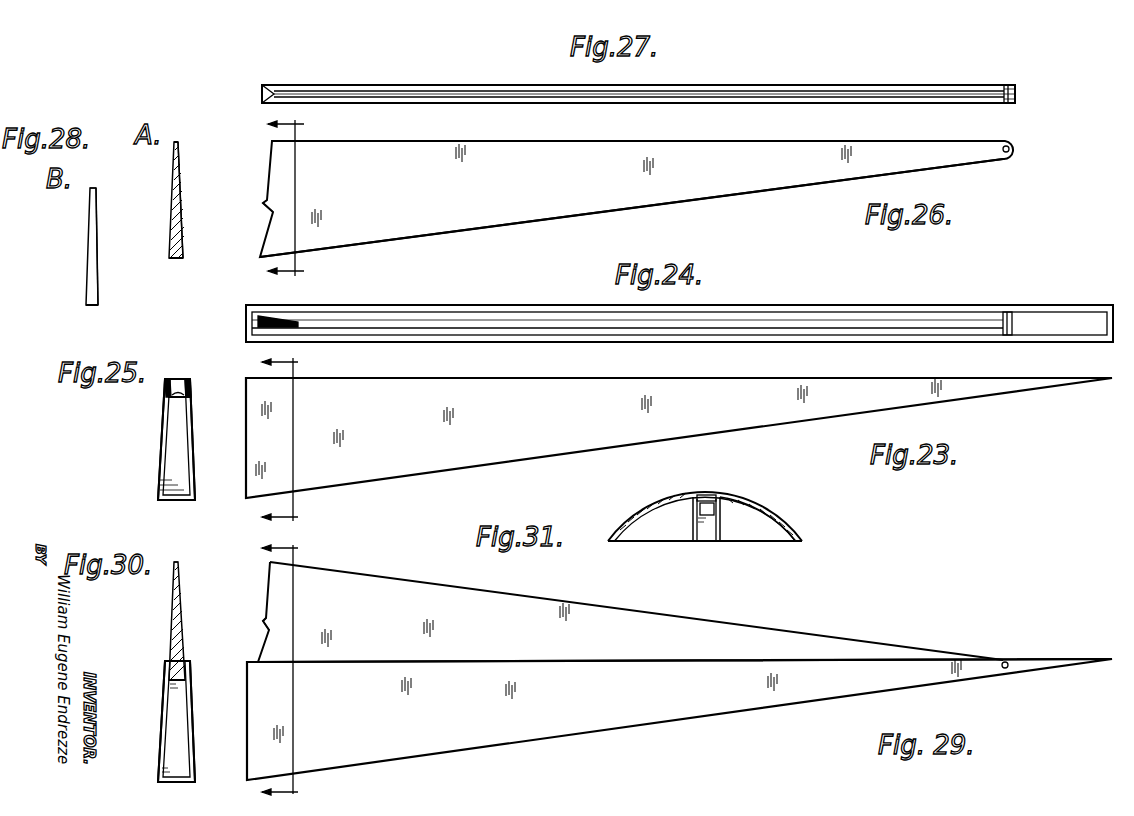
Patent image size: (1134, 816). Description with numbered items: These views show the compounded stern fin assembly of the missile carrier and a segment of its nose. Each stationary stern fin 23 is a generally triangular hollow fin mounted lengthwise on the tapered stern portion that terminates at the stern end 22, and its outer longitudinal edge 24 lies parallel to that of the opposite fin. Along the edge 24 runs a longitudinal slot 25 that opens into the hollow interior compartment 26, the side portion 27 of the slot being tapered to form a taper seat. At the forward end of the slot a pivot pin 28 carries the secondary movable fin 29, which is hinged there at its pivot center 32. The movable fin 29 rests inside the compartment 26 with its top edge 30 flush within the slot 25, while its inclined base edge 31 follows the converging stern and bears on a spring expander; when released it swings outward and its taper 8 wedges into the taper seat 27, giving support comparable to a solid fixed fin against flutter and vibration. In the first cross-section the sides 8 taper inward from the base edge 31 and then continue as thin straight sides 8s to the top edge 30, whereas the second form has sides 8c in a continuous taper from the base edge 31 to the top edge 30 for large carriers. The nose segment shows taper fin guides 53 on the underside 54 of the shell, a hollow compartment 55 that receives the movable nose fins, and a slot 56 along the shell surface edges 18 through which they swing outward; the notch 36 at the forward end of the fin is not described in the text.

In FIG. 28, the taper 8 is at (172, 230).
In FIG. 28, the straight sides 8s is at (177, 168).
In FIG. 28, the continuous taper sides 8c is at (95, 210).
In FIG. 31, the parallel edges 18 is at (654, 500).
In FIG. 25, the stern end 22 is at (192, 446).
In FIG. 30, the stern end 22 is at (192, 718).
In FIG. 24, the stationary stern fin 23 is at (804, 312).
In FIG. 23, the stationary stern fin 23 is at (679, 438).
In FIG. 29, the stationary stern fin 23 is at (679, 719).
In FIG. 24, the outer longitudinal edge 24 is at (420, 312).
In FIG. 23, the outer longitudinal edge 24 is at (576, 378).
In FIG. 25, the outer longitudinal edge 24 is at (170, 378).
In FIG. 30, the outer longitudinal edge 24 is at (166, 664).
In FIG. 29, the outer longitudinal edge 24 is at (594, 660).
In FIG. 24, the slot 25 is at (508, 326).
In FIG. 23, the slot 25 is at (296, 439).
In FIG. 25, the slot 25 is at (186, 380).
In FIG. 25, the hollow interior compartment 26 is at (166, 440).
In FIG. 30, the hollow interior compartment 26 is at (178, 766).
In FIG. 25, the side portion 27 is at (192, 398).
In FIG. 26, the pivot pin 28 is at (300, 197).
In FIG. 24, the pivot pin 28 is at (1010, 324).
In FIG. 29, the pivot pin 28 is at (1008, 662).
In FIG. 27, the secondary movable fin 29 is at (476, 88).
In FIG. 26, the secondary movable fin 29 is at (636, 199).
In FIG. 28, the secondary movable fin 29 is at (180, 212).
In FIG. 30, the secondary movable fin 29 is at (172, 624).
In FIG. 29, the secondary movable fin 29 is at (630, 612).
In FIG. 27, the top edge 30 is at (512, 96).
In FIG. 26, the top edge 30 is at (588, 141).
In FIG. 28, the top edge 30 is at (176, 142).
In FIG. 30, the top edge 30 is at (180, 563).
In FIG. 29, the top edge 30 is at (608, 602).
In FIG. 26, the base edge 31 is at (553, 220).
In FIG. 28, the base edge 31 is at (176, 260).
In FIG. 30, the base edge 31 is at (186, 686).
In FIG. 27, the pivot center 32 is at (1010, 86).
In FIG. 26, the pivot center 32 is at (1010, 146).
In FIG. 26, the notch 36 is at (264, 206).
In FIG. 29, the notch 36 is at (264, 624).
In FIG. 31, the taper fin guide 53 is at (716, 510).
In FIG. 31, the underside 54 is at (780, 520).
In FIG. 31, the hollow compartment 55 is at (668, 550).
In FIG. 31, the slot 56 is at (712, 496).